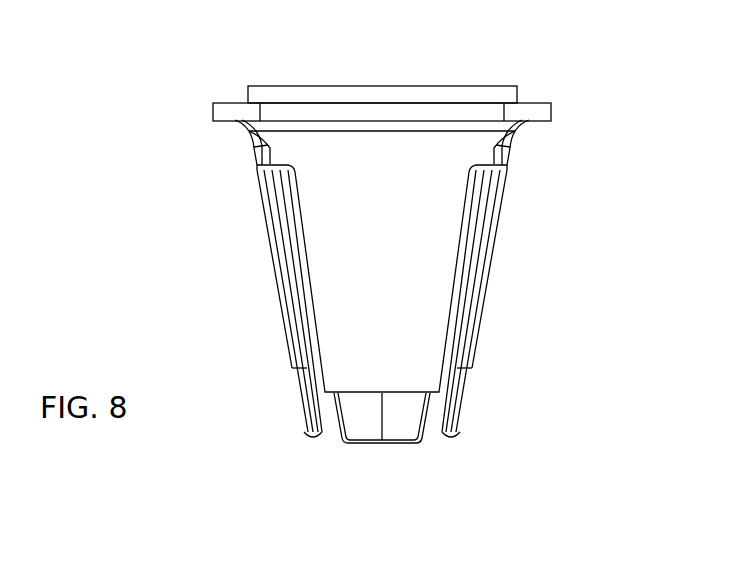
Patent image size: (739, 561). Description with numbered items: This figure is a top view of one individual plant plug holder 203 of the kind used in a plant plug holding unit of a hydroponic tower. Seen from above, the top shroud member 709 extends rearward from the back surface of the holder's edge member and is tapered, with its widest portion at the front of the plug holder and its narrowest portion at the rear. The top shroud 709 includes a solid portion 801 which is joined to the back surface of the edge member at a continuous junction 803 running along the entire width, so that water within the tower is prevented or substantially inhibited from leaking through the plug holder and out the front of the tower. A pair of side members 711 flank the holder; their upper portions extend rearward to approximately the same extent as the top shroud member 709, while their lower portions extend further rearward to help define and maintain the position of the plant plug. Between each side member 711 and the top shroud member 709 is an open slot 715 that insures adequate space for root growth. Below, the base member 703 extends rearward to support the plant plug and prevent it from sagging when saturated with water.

The individual plant plug holder 203 is at (597, 90).
The continuous junction 803 is at (302, 114).
The solid portion 801 is at (527, 132).
The top shroud member 709 is at (402, 274).
The side members 711 is at (284, 283).
The open slot 715 is at (330, 424).
The base member 703 is at (392, 422).